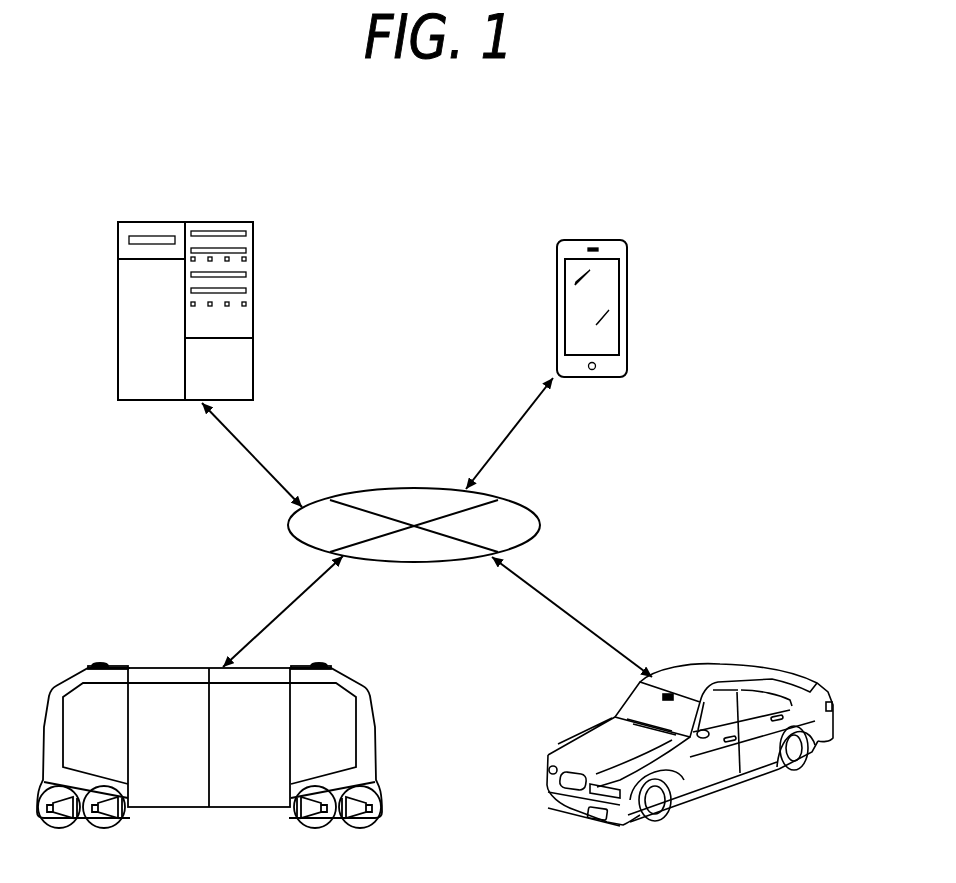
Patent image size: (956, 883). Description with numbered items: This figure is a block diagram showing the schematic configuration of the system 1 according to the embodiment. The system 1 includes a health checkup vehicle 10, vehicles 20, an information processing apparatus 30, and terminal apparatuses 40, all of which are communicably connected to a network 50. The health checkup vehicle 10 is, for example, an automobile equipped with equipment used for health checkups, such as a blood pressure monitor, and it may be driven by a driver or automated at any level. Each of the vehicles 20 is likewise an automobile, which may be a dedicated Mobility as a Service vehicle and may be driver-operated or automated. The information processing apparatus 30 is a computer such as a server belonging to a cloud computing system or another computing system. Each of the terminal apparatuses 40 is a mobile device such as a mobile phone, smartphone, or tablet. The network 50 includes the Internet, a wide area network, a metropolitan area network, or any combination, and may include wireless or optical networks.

The system 1 is at (409, 313).
The health checkup vehicle 10 is at (210, 820).
The vehicles 20 is at (727, 787).
The information processing apparatus 30 is at (164, 222).
The terminal apparatuses 40 is at (591, 240).
The network 50 is at (541, 523).